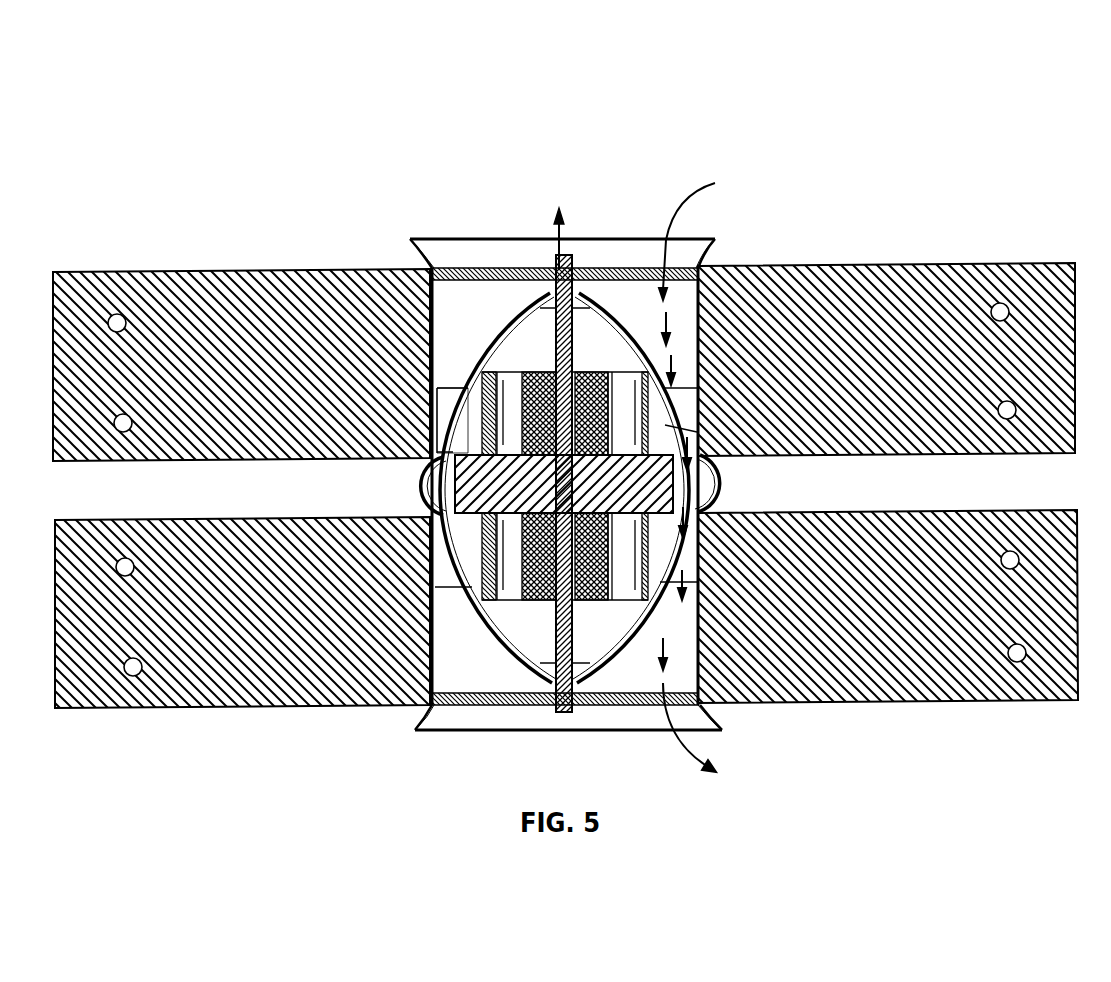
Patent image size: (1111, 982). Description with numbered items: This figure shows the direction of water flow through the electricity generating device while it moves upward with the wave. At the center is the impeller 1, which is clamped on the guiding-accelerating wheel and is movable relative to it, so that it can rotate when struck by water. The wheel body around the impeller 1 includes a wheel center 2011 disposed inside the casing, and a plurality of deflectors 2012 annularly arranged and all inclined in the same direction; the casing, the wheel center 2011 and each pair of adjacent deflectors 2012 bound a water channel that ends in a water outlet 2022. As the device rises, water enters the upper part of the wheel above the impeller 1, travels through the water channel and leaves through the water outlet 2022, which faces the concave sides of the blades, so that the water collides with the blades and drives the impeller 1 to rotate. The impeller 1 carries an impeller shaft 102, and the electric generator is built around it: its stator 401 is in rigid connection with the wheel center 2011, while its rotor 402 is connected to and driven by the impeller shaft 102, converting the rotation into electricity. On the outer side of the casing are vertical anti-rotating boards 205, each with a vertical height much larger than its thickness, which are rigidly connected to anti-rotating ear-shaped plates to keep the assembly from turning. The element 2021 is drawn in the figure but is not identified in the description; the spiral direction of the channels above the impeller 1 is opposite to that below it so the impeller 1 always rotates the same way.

The impeller 1 is at (708, 480).
The impeller shaft 102 is at (575, 268).
The vertical anti-rotating board 205 is at (850, 355).
The stator 401 is at (655, 387).
The rotor 402 is at (597, 385).
The wheel center 2011 is at (510, 323).
The deflector 2012 is at (453, 388).
The housing upper portion 2021 is at (453, 398).
The water outlet 2022 is at (418, 490).